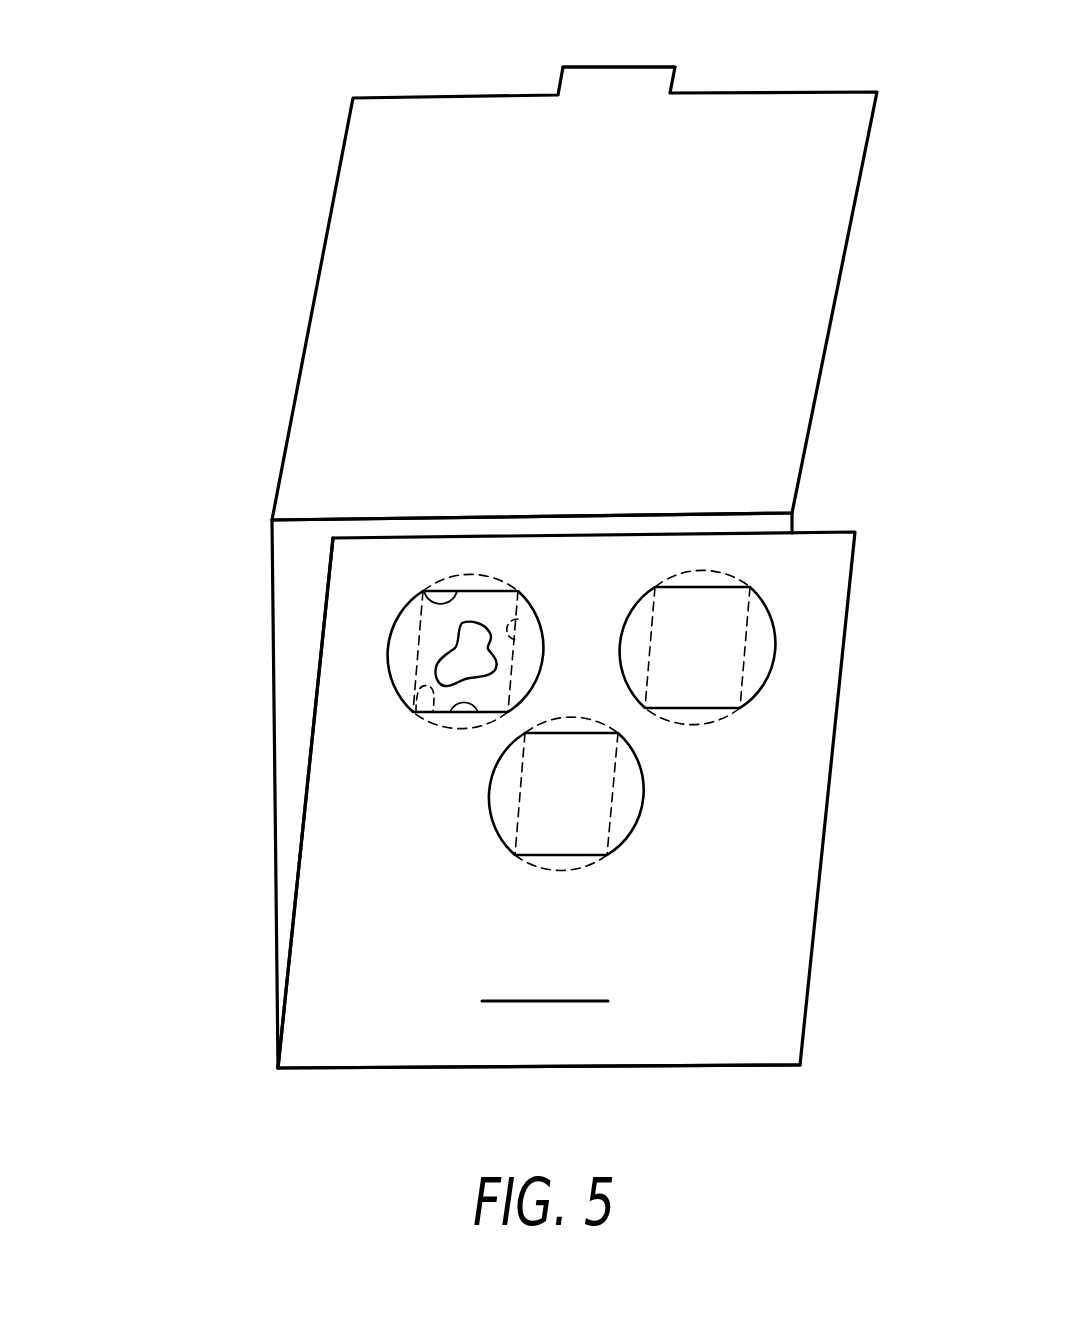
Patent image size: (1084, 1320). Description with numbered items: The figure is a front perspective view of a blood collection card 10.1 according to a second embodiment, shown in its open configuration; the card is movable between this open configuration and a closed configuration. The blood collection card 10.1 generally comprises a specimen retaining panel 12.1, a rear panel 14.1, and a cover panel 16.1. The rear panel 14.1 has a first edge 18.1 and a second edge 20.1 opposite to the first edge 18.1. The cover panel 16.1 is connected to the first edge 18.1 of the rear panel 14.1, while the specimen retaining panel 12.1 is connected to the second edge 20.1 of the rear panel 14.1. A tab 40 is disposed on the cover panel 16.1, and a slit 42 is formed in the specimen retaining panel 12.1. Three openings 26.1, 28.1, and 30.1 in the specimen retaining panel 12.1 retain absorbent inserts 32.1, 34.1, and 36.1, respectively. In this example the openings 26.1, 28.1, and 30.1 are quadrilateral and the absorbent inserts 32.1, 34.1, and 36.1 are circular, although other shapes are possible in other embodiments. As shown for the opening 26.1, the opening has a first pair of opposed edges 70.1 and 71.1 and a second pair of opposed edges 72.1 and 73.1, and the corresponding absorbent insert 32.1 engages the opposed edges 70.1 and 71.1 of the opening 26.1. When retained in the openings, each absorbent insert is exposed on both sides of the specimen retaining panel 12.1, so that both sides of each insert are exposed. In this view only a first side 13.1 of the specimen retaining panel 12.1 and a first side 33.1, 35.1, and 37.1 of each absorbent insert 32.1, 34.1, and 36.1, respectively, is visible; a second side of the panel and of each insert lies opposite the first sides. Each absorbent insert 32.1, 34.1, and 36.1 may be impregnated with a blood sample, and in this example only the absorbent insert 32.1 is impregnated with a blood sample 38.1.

The blood collection card 10.1 is at (175, 357).
The specimen retaining panel 12.1 is at (773, 823).
The first side of the specimen retaining panel 13.1 is at (352, 868).
The rear panel 14.1 is at (293, 713).
The cover panel 16.1 is at (767, 282).
The first edge 18.1 is at (302, 521).
The second edge 20.1 is at (305, 1070).
The opening 26.1 is at (480, 600).
The opening 28.1 is at (708, 610).
The opening 30.1 is at (580, 830).
The absorbent insert 32.1 is at (543, 647).
The first side of absorbent insert 33.1 is at (407, 660).
The absorbent insert 34.1 is at (773, 626).
The first side of absorbent insert 35.1 is at (637, 630).
The absorbent insert 36.1 is at (643, 787).
The first side of absorbent insert 37.1 is at (505, 797).
The blood sample 38.1 is at (465, 652).
The tab 40 is at (618, 82).
The slit 42 is at (557, 1001).
The opposed edge 70.1 is at (430, 605).
The opposed edge 71.1 is at (460, 704).
The opposed edge 72.1 is at (502, 618).
The opposed edge 73.1 is at (423, 717).